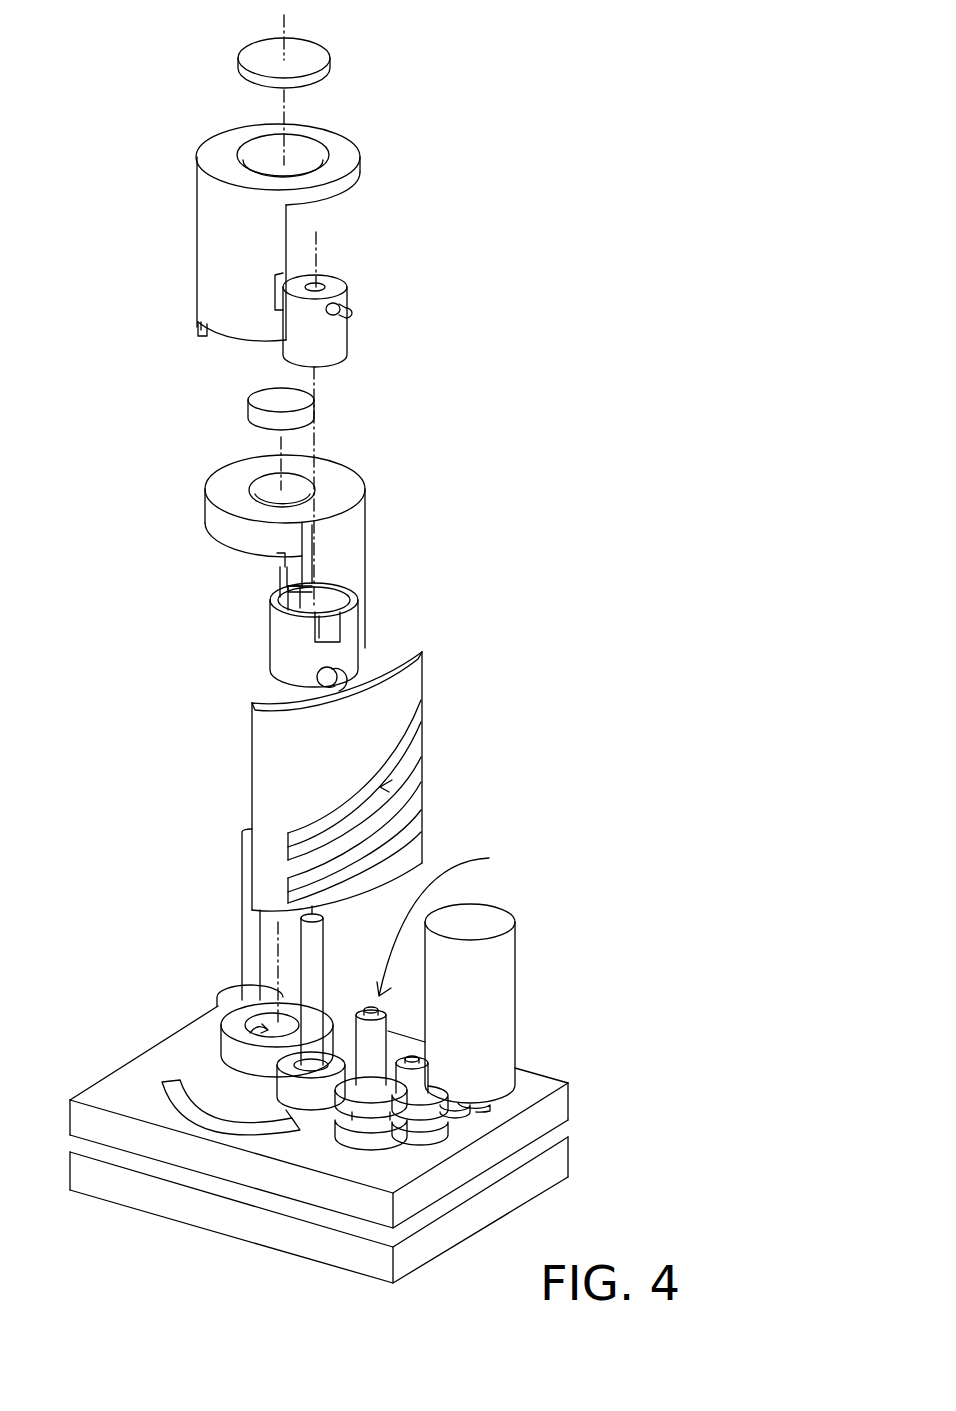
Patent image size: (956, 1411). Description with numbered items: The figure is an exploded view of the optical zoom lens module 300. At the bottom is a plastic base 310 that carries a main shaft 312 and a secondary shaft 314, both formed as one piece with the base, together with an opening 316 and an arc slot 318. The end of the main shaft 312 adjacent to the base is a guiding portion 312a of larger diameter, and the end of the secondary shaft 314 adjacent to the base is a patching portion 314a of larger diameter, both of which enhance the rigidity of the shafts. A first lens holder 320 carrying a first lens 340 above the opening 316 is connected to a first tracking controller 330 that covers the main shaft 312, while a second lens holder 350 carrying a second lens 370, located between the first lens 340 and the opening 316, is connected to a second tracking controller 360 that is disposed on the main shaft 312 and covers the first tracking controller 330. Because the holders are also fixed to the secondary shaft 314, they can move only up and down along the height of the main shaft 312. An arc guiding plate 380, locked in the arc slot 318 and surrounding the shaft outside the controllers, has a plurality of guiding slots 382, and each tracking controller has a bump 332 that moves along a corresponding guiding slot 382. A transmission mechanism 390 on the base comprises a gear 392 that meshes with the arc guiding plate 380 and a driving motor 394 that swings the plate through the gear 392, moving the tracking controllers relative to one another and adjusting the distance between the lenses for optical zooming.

The optical zoom lens module 300 is at (377, 657).
The base 310 is at (552, 1105).
The main shaft 312 is at (326, 947).
The guiding portion 312a is at (292, 1096).
The secondary shaft 314 is at (243, 942).
The patching portion 314a is at (228, 994).
The opening 316 is at (253, 1037).
The arc slot 318 is at (300, 1100).
The first lens holder 320 is at (202, 252).
The first tracking controller 330 is at (347, 300).
The bump 332 is at (345, 316).
The first lens 340 is at (238, 72).
The second lens holder 350 is at (360, 543).
The second tracking controller 360 is at (352, 623).
The second lens 370 is at (247, 420).
The arc guiding plate 380 is at (410, 697).
The guiding slots 382 is at (420, 760).
The transmission mechanism 390 is at (533, 842).
The gear 392 is at (452, 912).
The driving motor 394 is at (508, 1003).